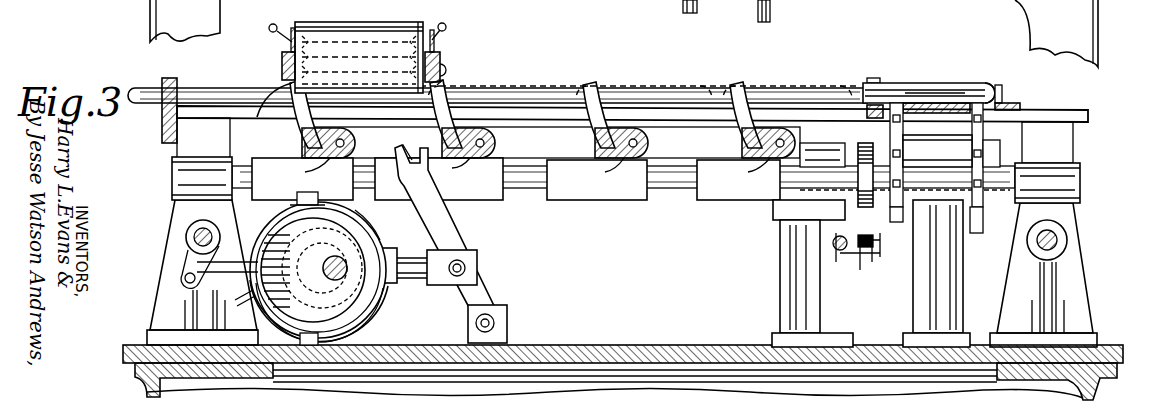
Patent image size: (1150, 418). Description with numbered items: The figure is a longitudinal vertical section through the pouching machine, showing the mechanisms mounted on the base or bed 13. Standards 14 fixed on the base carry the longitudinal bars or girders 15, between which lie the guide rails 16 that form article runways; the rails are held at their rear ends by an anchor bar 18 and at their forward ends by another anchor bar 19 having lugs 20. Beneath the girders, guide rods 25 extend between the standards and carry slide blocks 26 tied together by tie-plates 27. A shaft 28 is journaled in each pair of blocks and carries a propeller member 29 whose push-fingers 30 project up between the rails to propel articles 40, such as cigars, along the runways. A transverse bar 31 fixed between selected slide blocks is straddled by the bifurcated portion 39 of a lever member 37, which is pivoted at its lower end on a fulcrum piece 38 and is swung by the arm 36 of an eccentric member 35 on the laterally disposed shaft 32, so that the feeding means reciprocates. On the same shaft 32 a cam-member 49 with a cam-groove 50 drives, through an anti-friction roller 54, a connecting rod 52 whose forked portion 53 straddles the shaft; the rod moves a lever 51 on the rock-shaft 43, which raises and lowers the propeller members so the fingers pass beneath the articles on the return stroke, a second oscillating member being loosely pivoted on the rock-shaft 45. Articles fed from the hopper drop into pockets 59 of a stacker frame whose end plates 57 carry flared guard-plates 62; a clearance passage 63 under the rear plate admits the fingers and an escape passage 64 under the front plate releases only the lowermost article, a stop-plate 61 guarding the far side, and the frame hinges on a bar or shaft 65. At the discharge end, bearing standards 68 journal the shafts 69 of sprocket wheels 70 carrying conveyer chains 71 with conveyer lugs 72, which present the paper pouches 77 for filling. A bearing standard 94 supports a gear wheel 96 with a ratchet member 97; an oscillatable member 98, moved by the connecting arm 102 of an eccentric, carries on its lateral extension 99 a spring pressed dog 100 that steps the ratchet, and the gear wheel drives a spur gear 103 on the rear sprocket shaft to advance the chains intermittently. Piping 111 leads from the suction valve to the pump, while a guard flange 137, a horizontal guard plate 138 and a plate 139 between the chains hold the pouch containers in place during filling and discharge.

The base or bed 13 is at (135, 346).
The standard 14 is at (182, 147).
The longitudinal bar or girder 15 is at (225, 108).
The guide rail 16 is at (207, 88).
The anchor bar 18 is at (168, 78).
The anchor bar 19 is at (867, 112).
The lug 20 is at (870, 78).
The guide rod 25 is at (173, 180).
The slide block 26 is at (280, 165).
The tie-plate 27 is at (672, 140).
The shaft 28 is at (378, 141).
The propeller member 29 is at (310, 160).
The push-finger 30 is at (288, 84).
The transverse bar 31 is at (402, 150).
The shaft 32 is at (365, 278).
The eccentric member 35 is at (252, 293).
The arm 36 is at (400, 258).
The lever member 37 is at (480, 288).
The fulcrum piece 38 is at (503, 321).
The bifurcated portion 39 is at (402, 167).
The article 40 is at (790, 85).
The rock-shaft 43 is at (193, 233).
The rock-shaft 45 is at (1057, 240).
The cam-member 49 is at (382, 236).
The cam-groove 50 is at (343, 213).
The lever 51 is at (188, 256).
The connecting rod 52 is at (240, 260).
The bifurcated or forked portion 53 is at (365, 312).
The anti-friction roller 54 is at (289, 336).
The end plate 57 is at (282, 63).
The compartment or pocket 59 is at (418, 30).
The guard or stop-plate 61 is at (325, 24).
The guard-plate 62 is at (270, 26).
The clearance space or passage 63 is at (262, 108).
The escape passage 64 is at (445, 82).
The transverse bar or shaft 65 is at (447, 73).
The bearing standard 68 is at (943, 147).
The shaft 69 is at (1000, 167).
The sprocket wheel 70 is at (903, 133).
The conveyer chain 71 is at (912, 100).
The conveyer lug 72 is at (977, 233).
The paper pouch 77 is at (945, 92).
The bearing standard 94 is at (787, 277).
The gear wheel 96 is at (865, 255).
The ratchet member 97 is at (883, 247).
The oscillatable member 98 is at (845, 252).
The lateral extension 99 is at (868, 262).
The spring pressed dog 100 is at (880, 260).
The connecting arm 102 is at (838, 262).
The spur gear 103 is at (870, 141).
The piping 111 is at (770, 12).
The stop or guard flange 137 is at (1000, 95).
The horizontal guard plate 138 is at (880, 83).
The plate 139 is at (962, 100).